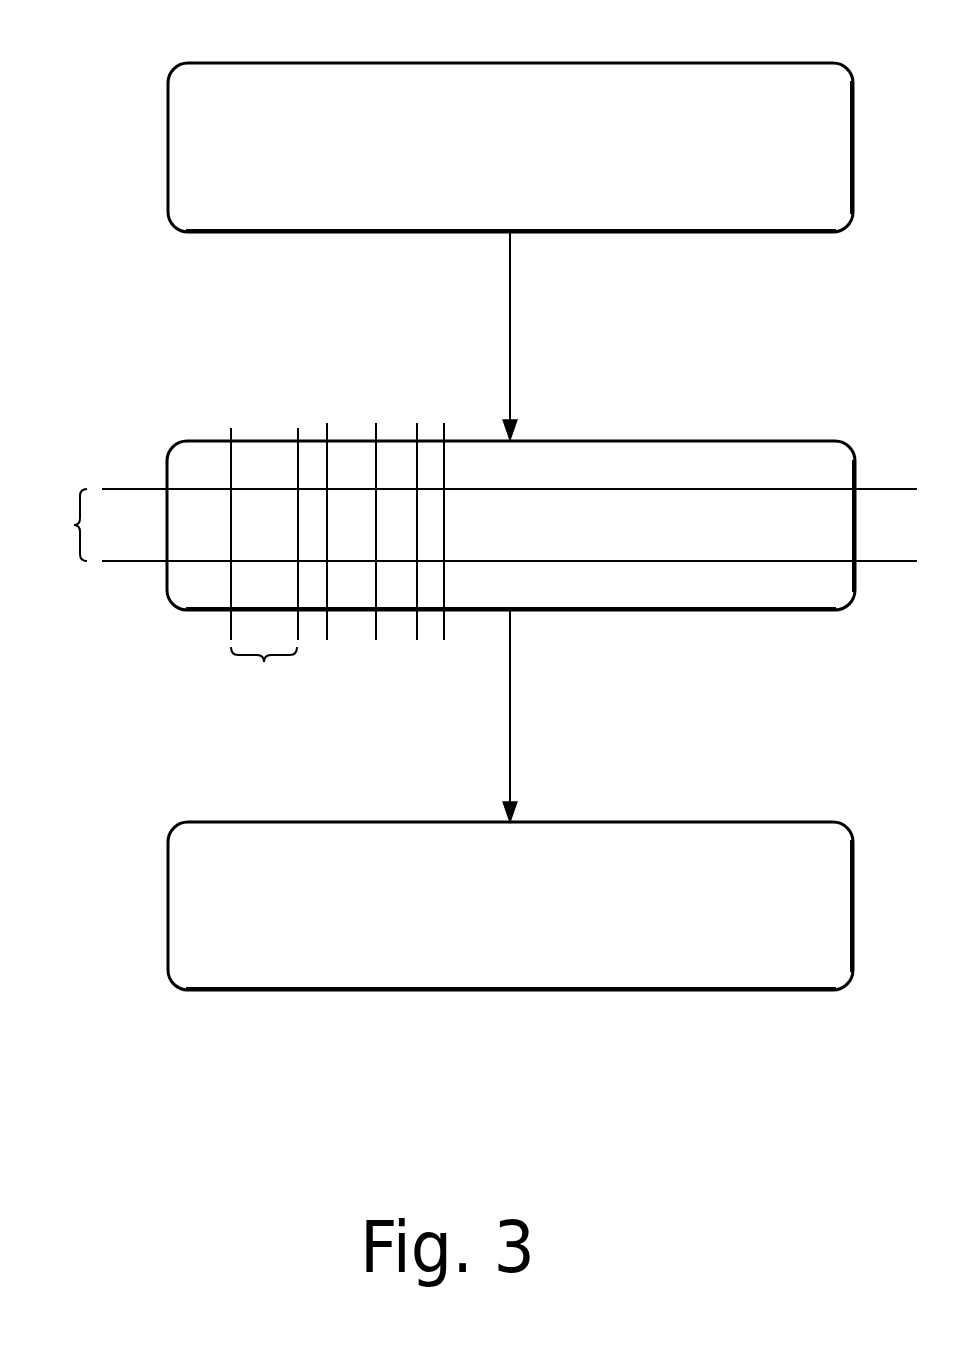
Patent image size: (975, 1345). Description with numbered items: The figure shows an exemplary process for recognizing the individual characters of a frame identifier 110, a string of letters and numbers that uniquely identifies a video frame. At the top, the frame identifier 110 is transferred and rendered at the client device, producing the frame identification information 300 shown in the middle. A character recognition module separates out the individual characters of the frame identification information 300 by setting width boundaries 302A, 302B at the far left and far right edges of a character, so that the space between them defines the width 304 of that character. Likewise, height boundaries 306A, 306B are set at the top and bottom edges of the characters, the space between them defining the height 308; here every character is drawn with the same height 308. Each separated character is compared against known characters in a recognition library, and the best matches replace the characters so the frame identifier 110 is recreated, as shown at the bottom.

The frame identifier 110 is at (778, 63).
The frame identification information 300 is at (778, 441).
The width boundary 302A is at (231, 428).
The width boundary 302B is at (298, 428).
The width 304 is at (264, 675).
The height boundary 306A is at (152, 489).
The height boundary 306B is at (152, 561).
The height 308 is at (53, 525).